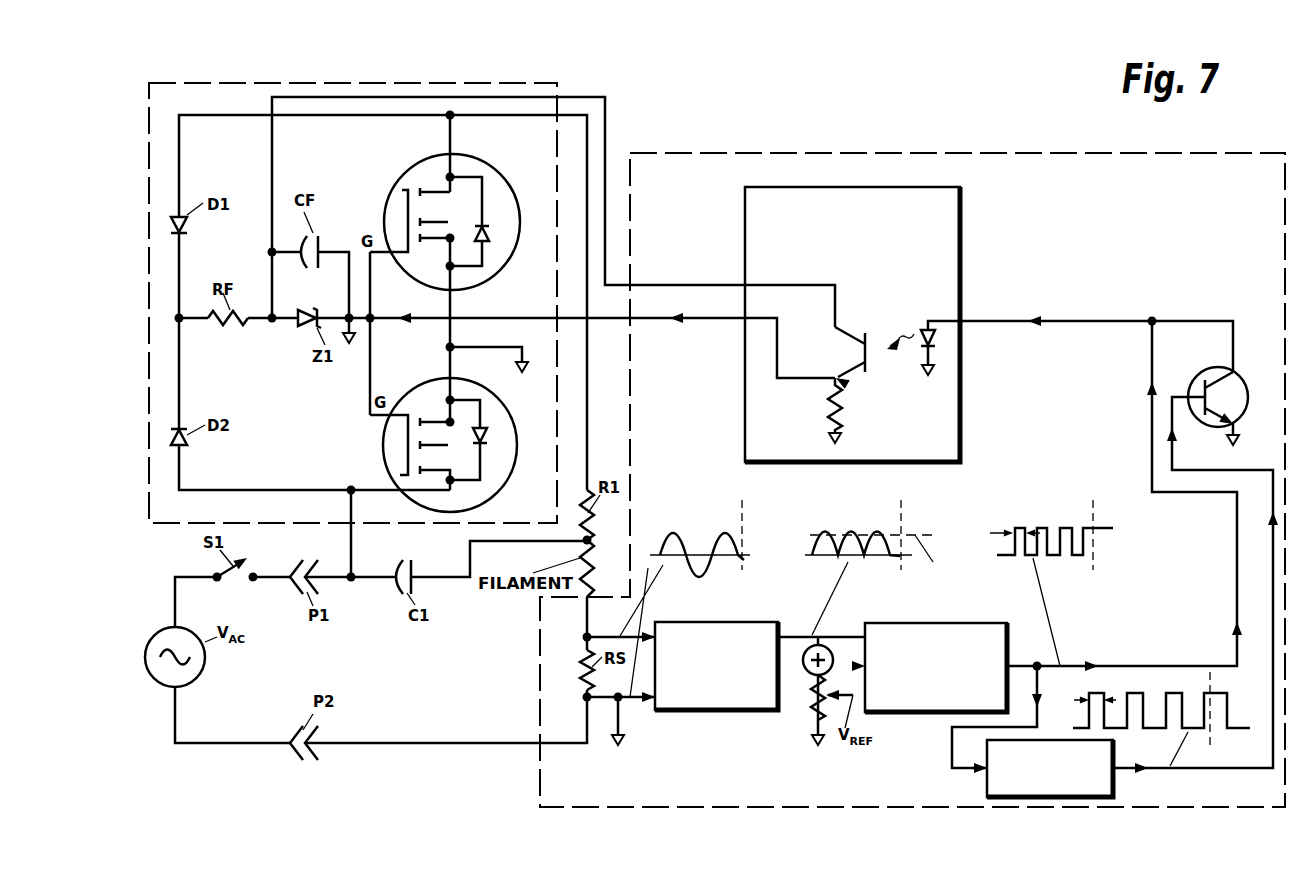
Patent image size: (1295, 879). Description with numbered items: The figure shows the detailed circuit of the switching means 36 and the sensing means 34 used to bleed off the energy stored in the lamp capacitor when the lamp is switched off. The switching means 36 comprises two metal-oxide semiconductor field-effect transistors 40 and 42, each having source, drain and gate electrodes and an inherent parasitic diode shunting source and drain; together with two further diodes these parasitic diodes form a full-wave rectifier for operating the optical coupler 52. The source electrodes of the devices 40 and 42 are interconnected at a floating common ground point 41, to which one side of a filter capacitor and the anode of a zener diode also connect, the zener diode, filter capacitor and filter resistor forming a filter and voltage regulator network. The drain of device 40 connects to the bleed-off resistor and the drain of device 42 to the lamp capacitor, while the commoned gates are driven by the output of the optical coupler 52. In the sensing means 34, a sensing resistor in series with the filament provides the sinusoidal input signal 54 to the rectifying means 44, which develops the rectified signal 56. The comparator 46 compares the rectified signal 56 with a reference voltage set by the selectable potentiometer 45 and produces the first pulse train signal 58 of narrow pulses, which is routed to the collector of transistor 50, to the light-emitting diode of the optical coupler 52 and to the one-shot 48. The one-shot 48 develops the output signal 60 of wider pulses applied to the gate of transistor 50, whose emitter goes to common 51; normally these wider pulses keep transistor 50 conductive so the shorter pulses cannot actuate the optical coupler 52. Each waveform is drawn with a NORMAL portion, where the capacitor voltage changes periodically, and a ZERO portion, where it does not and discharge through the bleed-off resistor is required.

The sensing means 34 is at (755, 153).
The switching means 36 is at (545, 83).
The metal-oxide semiconductor field-effect transistor 40 is at (497, 170).
The common ground point 41 is at (349, 345).
The metal-oxide semiconductor field-effect transistor 42 is at (483, 388).
The rectifying means 44 is at (727, 622).
The selectable potentiometer 45 is at (812, 712).
The comparator 46 is at (1000, 623).
The one-shot 48 is at (987, 784).
The transistor 50 is at (1242, 380).
The common 51 is at (617, 747).
The optical coupler 52 is at (962, 212).
The input signal 54 is at (662, 542).
The rectified signal 56 is at (817, 528).
The first pulse train signal 58 is at (993, 547).
The output signal 60 is at (1089, 691).